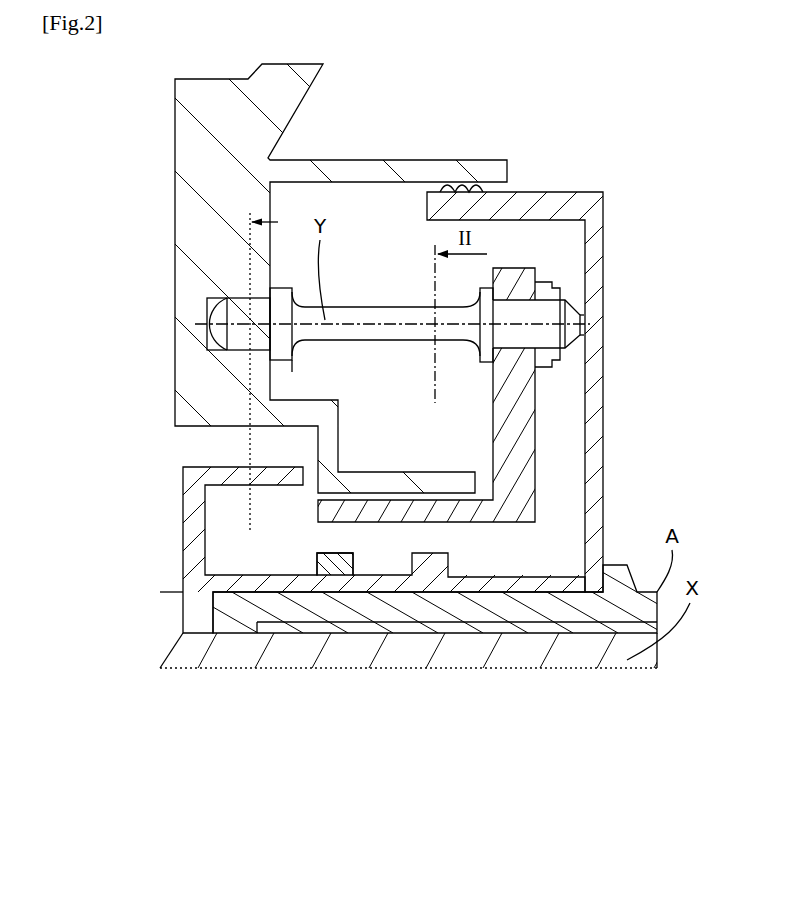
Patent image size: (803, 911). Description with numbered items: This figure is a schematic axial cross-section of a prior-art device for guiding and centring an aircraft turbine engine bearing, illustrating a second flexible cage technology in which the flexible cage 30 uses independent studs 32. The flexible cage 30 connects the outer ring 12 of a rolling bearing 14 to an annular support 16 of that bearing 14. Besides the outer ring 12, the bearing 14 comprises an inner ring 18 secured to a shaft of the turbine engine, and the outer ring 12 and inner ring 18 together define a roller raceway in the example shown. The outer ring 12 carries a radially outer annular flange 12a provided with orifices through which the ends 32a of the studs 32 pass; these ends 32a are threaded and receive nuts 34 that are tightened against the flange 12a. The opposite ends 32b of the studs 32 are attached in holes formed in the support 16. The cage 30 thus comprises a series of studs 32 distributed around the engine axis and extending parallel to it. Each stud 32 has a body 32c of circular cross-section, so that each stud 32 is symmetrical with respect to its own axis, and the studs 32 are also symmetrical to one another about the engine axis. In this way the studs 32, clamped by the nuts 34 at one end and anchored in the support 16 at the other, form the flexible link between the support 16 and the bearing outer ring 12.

The outer ring 12 is at (560, 460).
The radially outer annular flange 12a is at (523, 415).
The rolling bearing 14 is at (440, 535).
The annular support 16 is at (173, 412).
The inner ring 18 is at (340, 565).
The flexible cage 30 is at (482, 240).
The stud 32 is at (462, 292).
The end of stud 32a is at (557, 330).
The opposite end of stud 32b is at (242, 305).
The body of stud 32c is at (380, 313).
The nut 34 is at (557, 287).